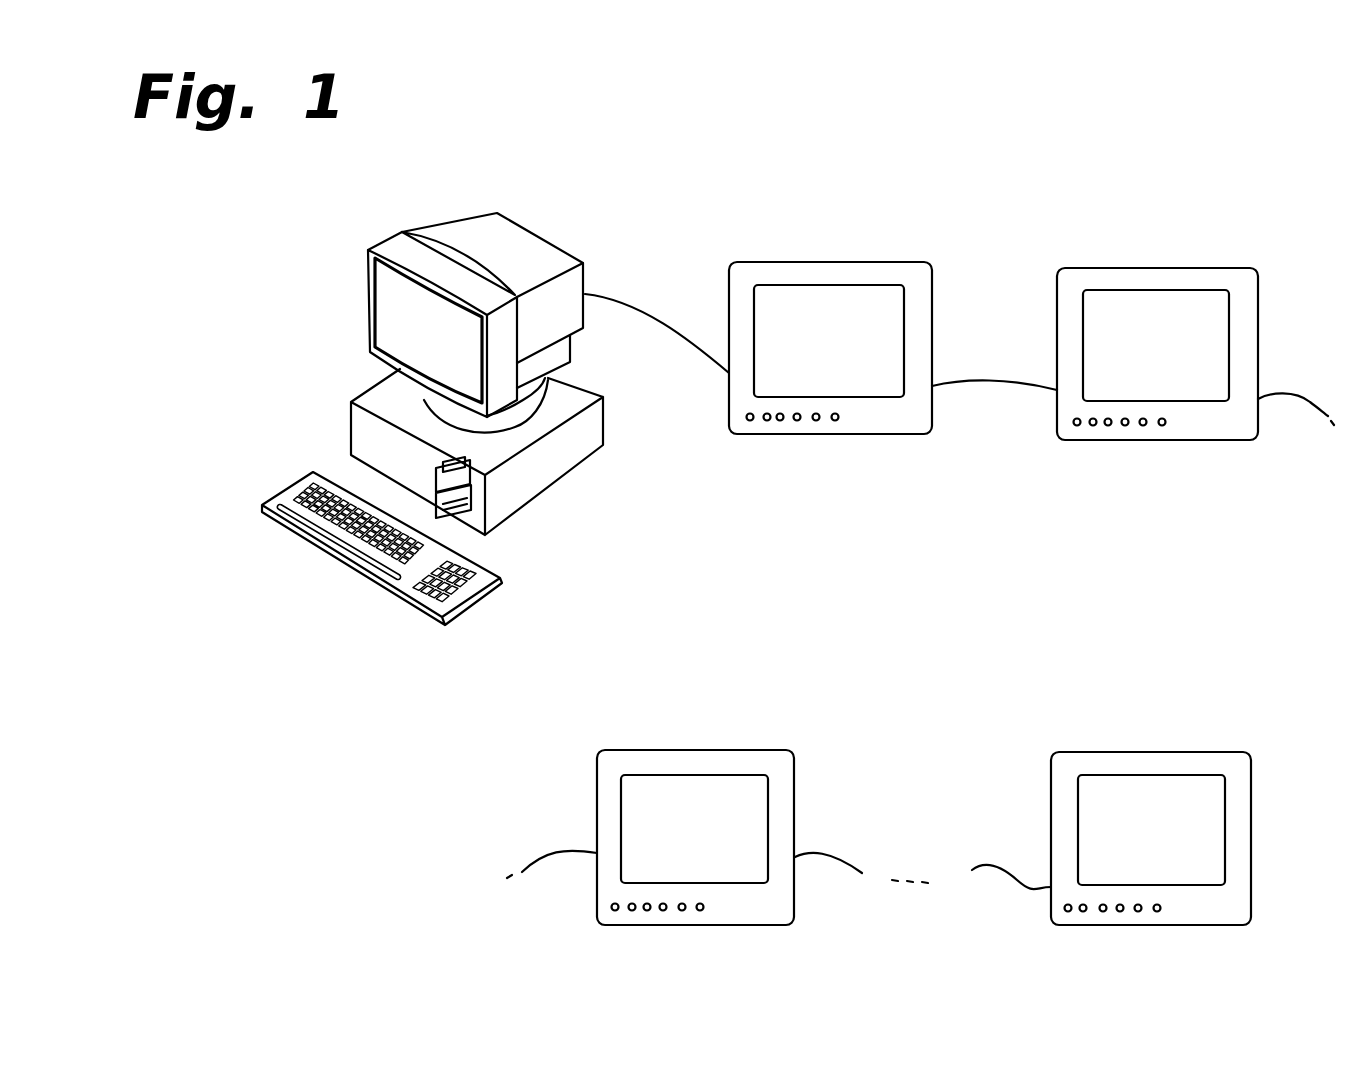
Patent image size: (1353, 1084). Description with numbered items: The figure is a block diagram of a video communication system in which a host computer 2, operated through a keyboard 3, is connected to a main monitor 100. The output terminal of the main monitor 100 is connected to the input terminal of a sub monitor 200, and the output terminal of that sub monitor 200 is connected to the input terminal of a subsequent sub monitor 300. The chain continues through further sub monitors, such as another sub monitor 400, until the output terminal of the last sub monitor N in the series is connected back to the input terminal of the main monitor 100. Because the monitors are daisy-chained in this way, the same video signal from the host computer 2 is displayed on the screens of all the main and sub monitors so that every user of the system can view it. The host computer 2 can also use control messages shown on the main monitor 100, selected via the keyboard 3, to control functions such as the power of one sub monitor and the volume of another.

The main monitor 100 is at (521, 212).
The host computer 2 is at (350, 430).
The keyboard 3 is at (348, 568).
The sub monitor 200 is at (840, 262).
The subsequent sub monitor 300 is at (1162, 268).
The sub monitor 400 is at (700, 750).
The last sub monitor N is at (1157, 752).